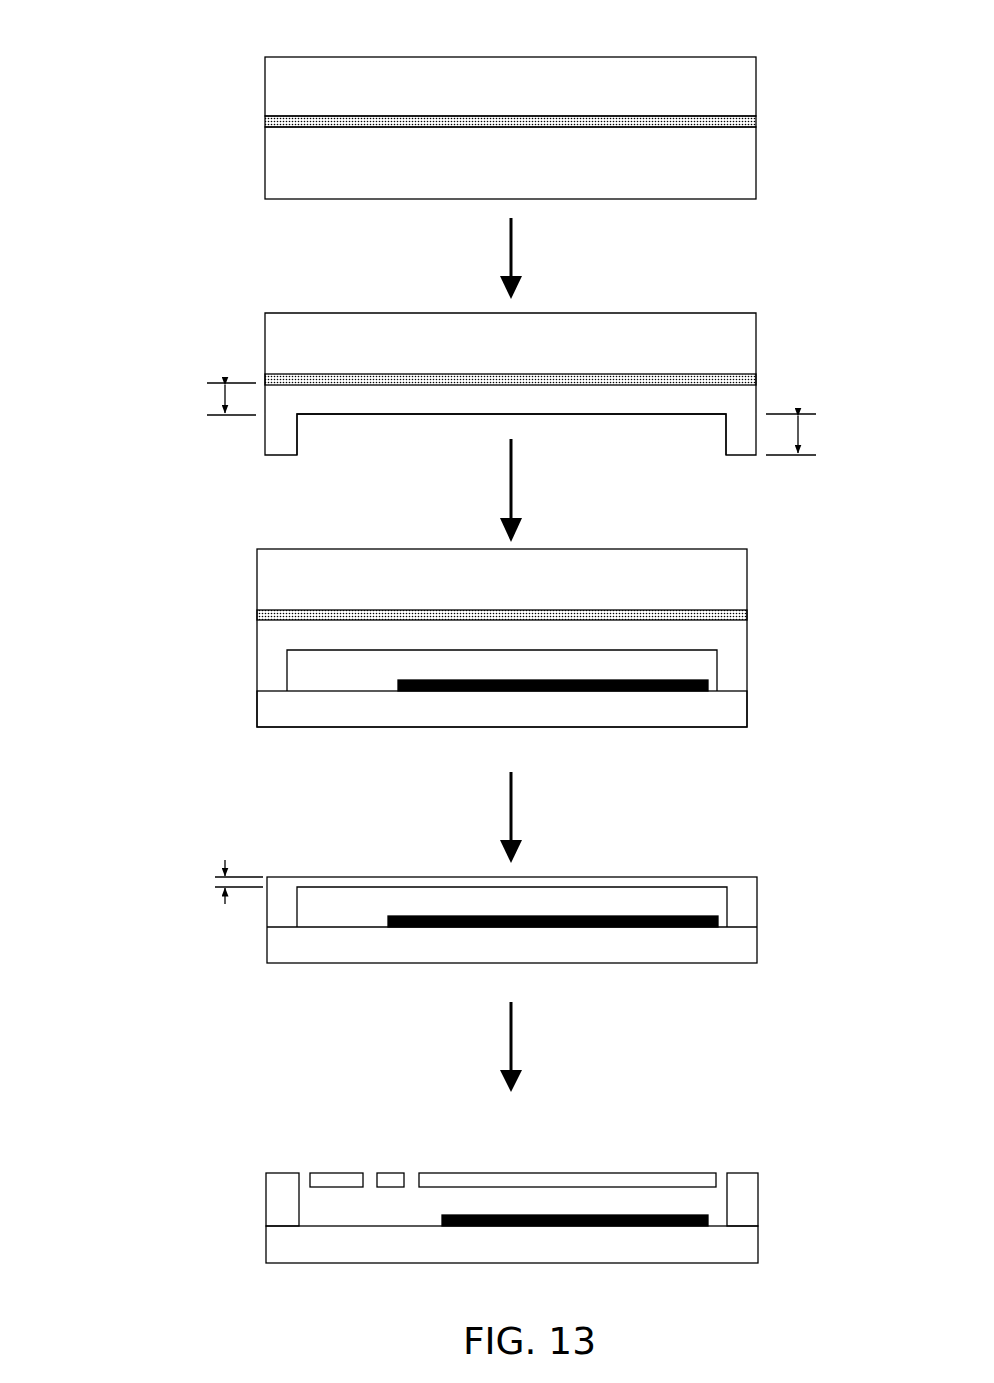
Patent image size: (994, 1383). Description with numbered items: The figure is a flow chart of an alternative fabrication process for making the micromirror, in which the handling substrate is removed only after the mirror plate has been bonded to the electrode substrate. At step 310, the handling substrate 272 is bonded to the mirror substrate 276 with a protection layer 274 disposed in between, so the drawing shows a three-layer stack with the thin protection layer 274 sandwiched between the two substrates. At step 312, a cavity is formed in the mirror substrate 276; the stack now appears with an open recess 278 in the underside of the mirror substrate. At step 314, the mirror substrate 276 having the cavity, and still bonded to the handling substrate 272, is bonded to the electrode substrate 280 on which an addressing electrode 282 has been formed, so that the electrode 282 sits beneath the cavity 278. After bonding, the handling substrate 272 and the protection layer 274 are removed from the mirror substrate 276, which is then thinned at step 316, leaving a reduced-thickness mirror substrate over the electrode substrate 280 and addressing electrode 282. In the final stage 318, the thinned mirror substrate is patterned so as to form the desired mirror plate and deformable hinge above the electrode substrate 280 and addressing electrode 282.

The handling substrate 272 is at (567, 77).
The protection layer 274 is at (757, 125).
The mirror substrate 276 is at (567, 185).
The cavity / recess 278 is at (570, 398).
The electrode substrate 280 is at (570, 710).
The addressing electrode 282 is at (453, 692).
The step 310 is at (471, 128).
The step 312 is at (182, 366).
The step 314 is at (463, 586).
The step 316 is at (183, 906).
The process step: singulated structure 318 is at (176, 1181).